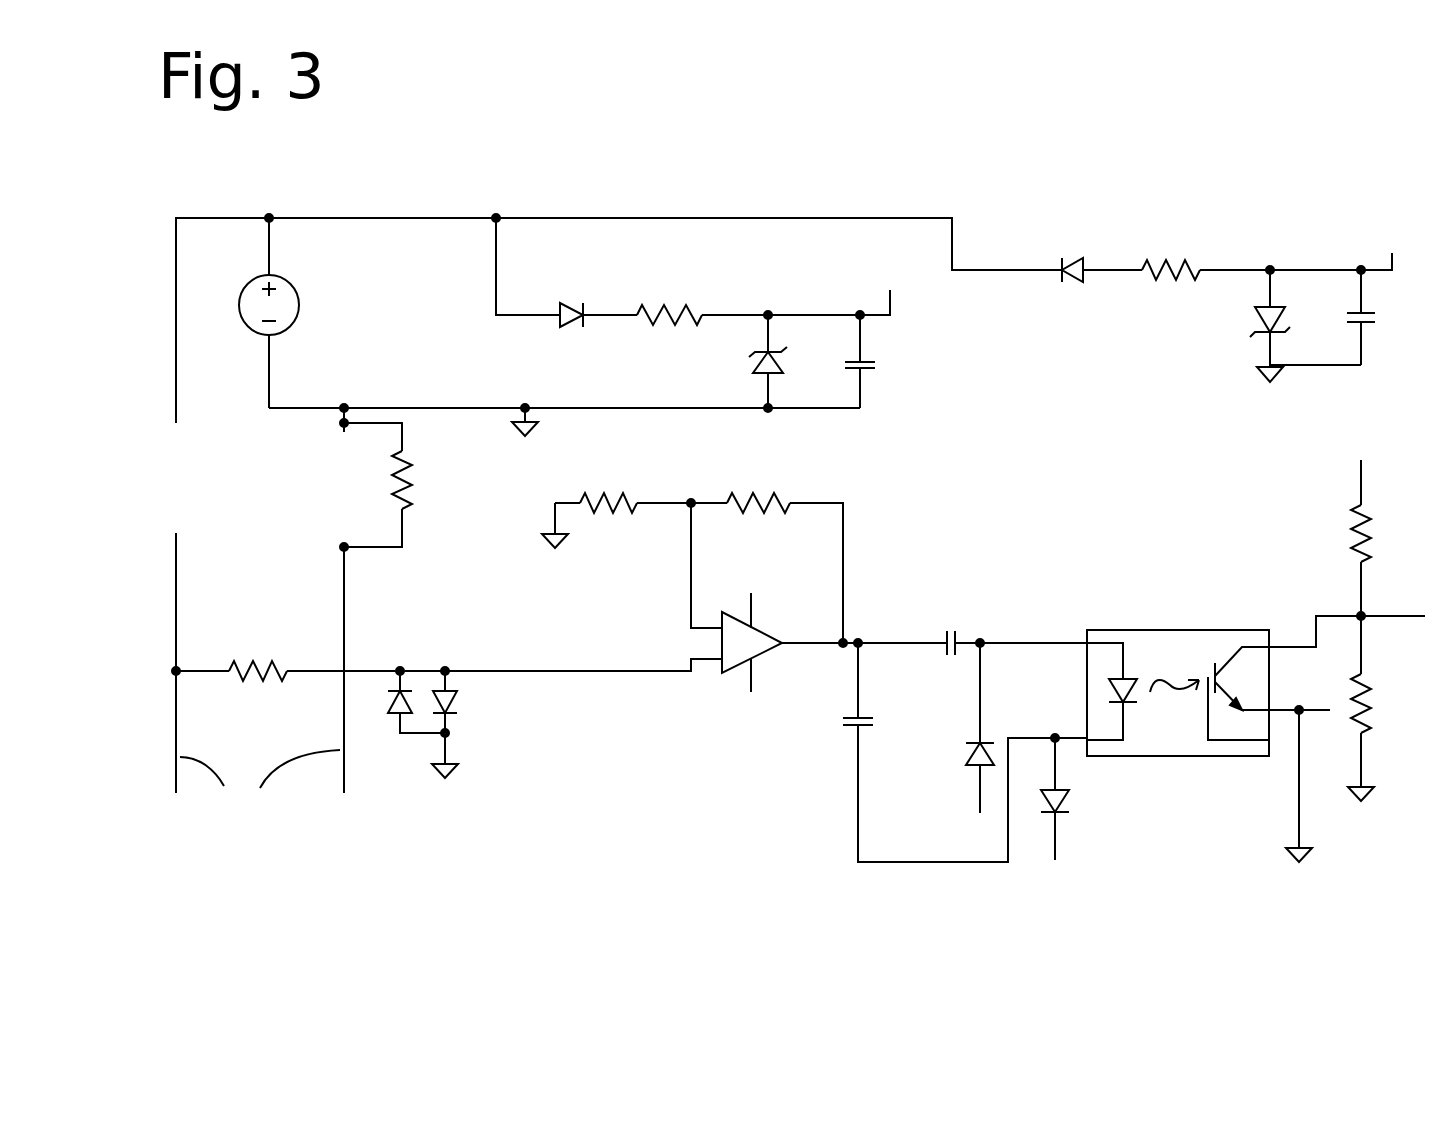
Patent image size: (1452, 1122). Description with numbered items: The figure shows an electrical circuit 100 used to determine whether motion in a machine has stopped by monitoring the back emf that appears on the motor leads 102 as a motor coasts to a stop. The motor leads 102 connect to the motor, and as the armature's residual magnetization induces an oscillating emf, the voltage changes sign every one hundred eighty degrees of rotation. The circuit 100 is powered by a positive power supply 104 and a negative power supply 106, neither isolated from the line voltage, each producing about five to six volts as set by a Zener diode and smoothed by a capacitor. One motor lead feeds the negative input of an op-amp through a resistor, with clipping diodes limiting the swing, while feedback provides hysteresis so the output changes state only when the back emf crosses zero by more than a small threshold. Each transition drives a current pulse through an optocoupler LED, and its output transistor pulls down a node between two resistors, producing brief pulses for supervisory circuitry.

The electrical circuit 100 is at (697, 113).
The motor leads 102 is at (260, 803).
The positive power supply 104 is at (777, 269).
The negative power supply 106 is at (1215, 192).